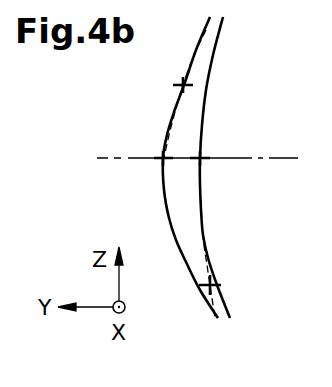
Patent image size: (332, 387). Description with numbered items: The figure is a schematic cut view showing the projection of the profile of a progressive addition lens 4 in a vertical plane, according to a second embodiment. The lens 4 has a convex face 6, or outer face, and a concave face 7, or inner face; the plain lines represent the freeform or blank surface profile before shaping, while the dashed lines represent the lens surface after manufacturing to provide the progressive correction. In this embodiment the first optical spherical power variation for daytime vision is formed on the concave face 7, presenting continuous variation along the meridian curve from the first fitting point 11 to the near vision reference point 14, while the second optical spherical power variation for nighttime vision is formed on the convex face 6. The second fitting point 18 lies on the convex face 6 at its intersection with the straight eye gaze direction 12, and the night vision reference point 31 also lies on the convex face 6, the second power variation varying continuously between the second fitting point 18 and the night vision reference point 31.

The lens 4 is at (193, 167).
The convex face 6 is at (172, 218).
The concave face 7 is at (214, 53).
The first fitting point 11 is at (202, 156).
The straight eye gaze direction 12 is at (277, 157).
The near vision reference point 14 is at (214, 280).
The second fitting point 18 is at (162, 157).
The night vision reference point 31 is at (181, 85).